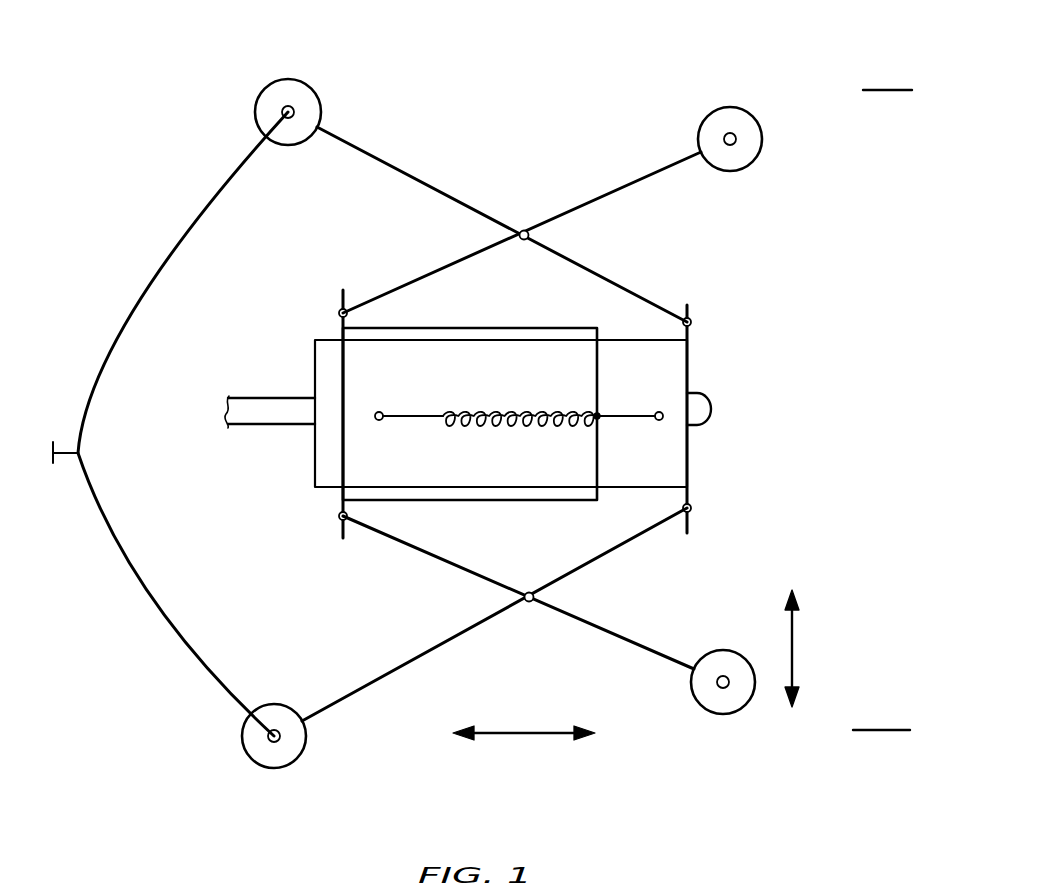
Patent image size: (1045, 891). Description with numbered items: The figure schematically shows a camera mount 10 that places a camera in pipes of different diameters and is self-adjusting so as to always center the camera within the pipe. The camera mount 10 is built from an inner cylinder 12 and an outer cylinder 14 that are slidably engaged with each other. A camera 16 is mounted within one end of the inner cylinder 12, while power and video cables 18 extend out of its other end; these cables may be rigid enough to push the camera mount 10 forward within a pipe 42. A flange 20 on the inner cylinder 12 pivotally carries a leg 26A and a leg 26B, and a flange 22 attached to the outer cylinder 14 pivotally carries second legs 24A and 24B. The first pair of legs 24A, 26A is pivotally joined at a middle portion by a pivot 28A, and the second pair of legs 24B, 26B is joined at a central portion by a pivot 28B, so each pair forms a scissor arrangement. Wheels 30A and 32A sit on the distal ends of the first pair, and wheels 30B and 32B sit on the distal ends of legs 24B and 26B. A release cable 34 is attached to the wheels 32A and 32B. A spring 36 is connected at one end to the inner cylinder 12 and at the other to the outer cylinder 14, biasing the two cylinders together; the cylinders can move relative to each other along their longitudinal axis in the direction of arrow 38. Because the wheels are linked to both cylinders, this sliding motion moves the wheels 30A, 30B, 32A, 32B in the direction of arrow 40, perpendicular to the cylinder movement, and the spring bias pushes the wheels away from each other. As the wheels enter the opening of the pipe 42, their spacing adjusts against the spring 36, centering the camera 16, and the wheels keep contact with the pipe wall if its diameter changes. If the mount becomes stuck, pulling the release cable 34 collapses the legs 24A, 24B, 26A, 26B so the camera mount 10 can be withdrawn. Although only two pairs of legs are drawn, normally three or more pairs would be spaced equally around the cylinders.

The camera mount 10 is at (522, 182).
The inner cylinder 12 is at (627, 488).
The outer cylinder 14 is at (483, 328).
The camera 16 is at (710, 398).
The power and video cables 18 is at (262, 424).
The flange 20 is at (692, 510).
The flange 22 is at (339, 518).
The leg 24A is at (648, 183).
The leg 24B is at (430, 553).
The leg 26A is at (600, 273).
The leg 26B is at (465, 633).
The pivot 28A is at (530, 230).
The pivot 28B is at (527, 592).
The wheel 30A is at (740, 113).
The wheel 30B is at (723, 702).
The wheel 32A is at (305, 102).
The wheel 32B is at (300, 748).
The release cable 34 is at (170, 630).
The spring 36 is at (418, 416).
The arrow 38 is at (525, 734).
The arrow 40 is at (792, 645).
The pipe 42 is at (887, 90).